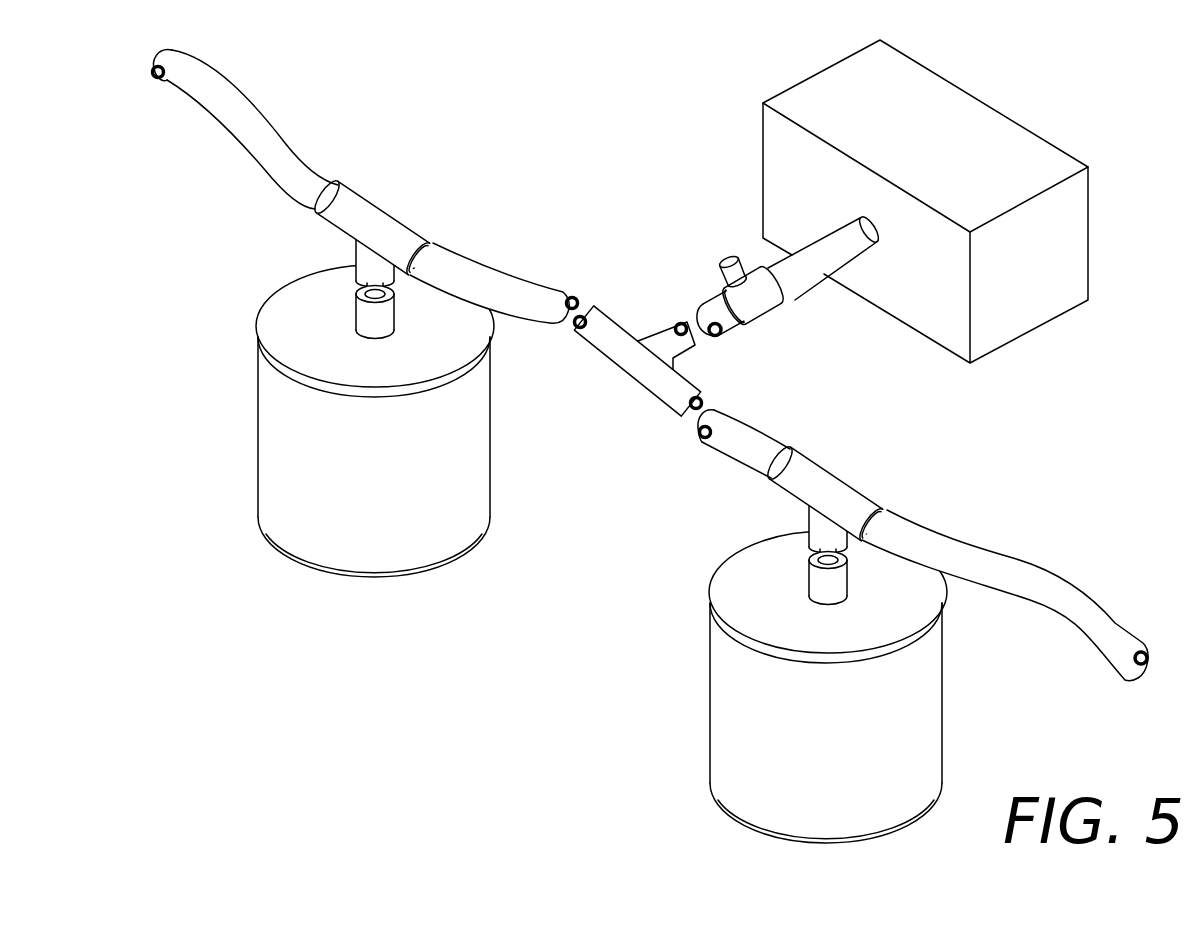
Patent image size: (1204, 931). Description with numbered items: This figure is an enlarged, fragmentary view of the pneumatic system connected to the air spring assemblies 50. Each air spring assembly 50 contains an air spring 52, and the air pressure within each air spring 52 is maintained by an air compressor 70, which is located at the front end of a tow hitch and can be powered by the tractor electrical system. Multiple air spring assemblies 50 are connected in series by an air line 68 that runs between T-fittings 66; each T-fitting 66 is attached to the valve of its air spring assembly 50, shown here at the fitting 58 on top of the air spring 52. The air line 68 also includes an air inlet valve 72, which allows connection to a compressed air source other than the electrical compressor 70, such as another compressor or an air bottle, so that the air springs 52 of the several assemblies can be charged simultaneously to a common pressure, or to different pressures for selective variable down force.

The air spring assembly 50 is at (227, 310).
The air spring 52 is at (259, 438).
The container fitting 58 is at (356, 294).
The T-fitting 66 is at (383, 211).
The air line 68 is at (238, 86).
The air compressor 70 is at (1043, 326).
The air inlet valve 72 is at (722, 260).